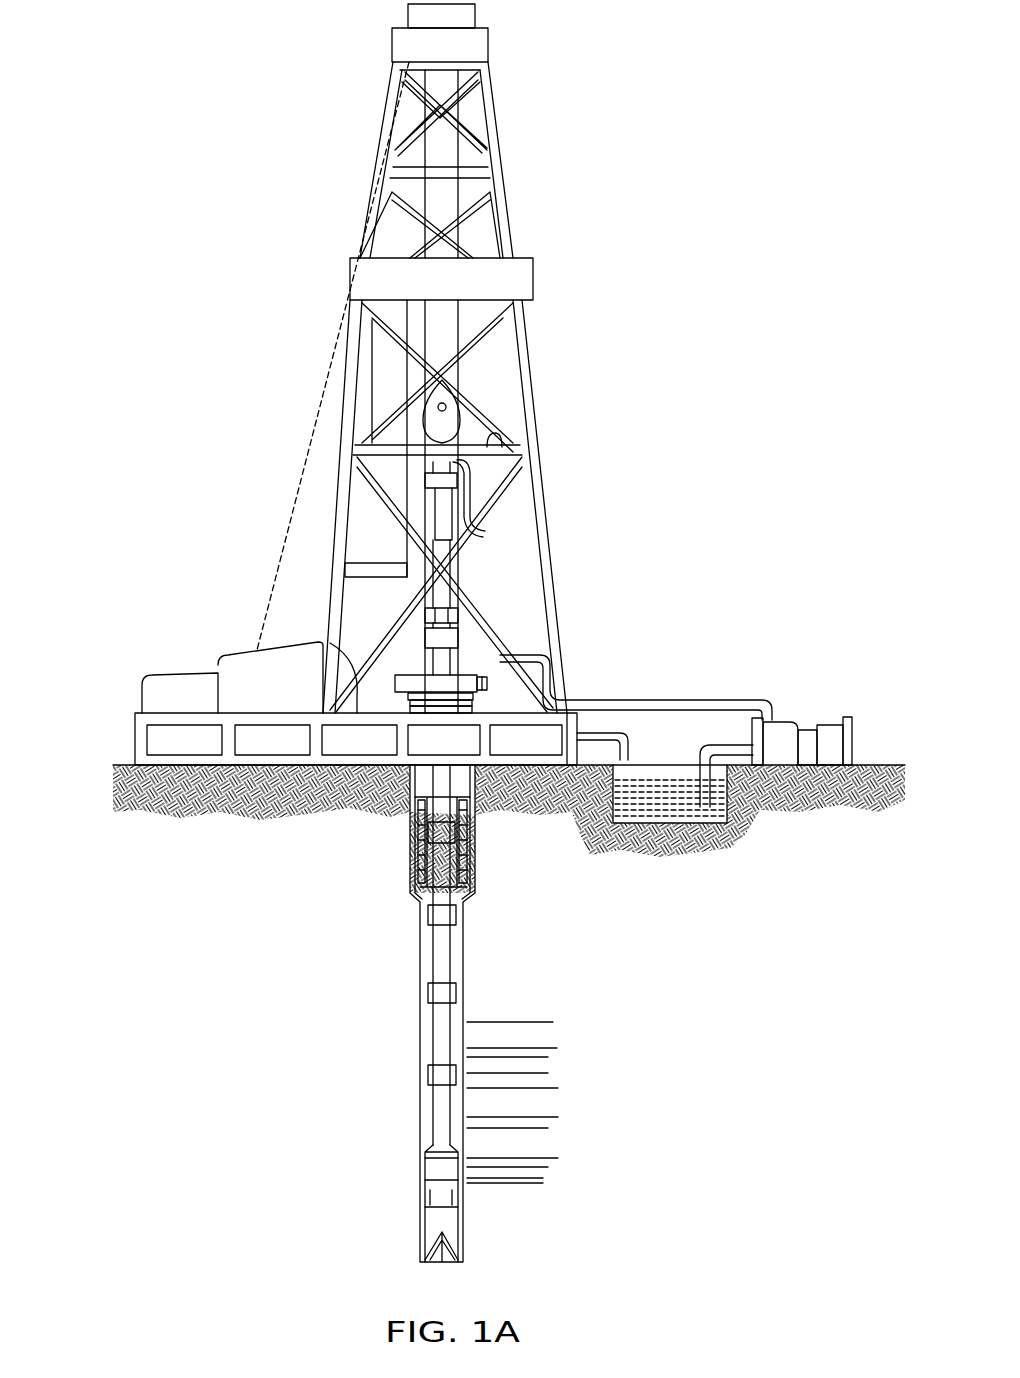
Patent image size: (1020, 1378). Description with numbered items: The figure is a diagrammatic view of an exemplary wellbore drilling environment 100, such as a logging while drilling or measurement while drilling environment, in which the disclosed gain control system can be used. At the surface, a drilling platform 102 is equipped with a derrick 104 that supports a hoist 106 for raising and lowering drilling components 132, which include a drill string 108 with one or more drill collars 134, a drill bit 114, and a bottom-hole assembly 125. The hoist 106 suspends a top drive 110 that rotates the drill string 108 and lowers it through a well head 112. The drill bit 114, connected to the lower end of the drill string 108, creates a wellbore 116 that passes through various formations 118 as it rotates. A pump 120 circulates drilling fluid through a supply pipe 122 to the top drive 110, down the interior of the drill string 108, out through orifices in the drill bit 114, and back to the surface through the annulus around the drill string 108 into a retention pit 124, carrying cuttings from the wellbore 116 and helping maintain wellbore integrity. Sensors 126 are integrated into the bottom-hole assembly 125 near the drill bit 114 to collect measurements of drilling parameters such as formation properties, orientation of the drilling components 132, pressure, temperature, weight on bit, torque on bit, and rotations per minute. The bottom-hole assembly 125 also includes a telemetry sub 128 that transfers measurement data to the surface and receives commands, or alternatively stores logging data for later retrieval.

The wellbore drilling environment 100 is at (312, 75).
The drilling platform 102 is at (135, 737).
The derrick 104 is at (503, 207).
The hoist 106 is at (460, 415).
The drill string 108 is at (452, 953).
The top drive 110 is at (447, 502).
The well head 112 is at (463, 672).
The drill bit 114 is at (458, 1247).
The wellbore 116 is at (463, 982).
The formations 118 is at (562, 1018).
The pump 120 is at (782, 730).
The supply pipe 122 is at (665, 700).
The retention pit 124 is at (667, 812).
The bottom-hole assembly 125 is at (345, 1135).
The sensors 126 is at (427, 1193).
The telemetry sub 128 is at (427, 1162).
The drilling components 132 is at (458, 612).
The drill collars 134 is at (440, 1203).